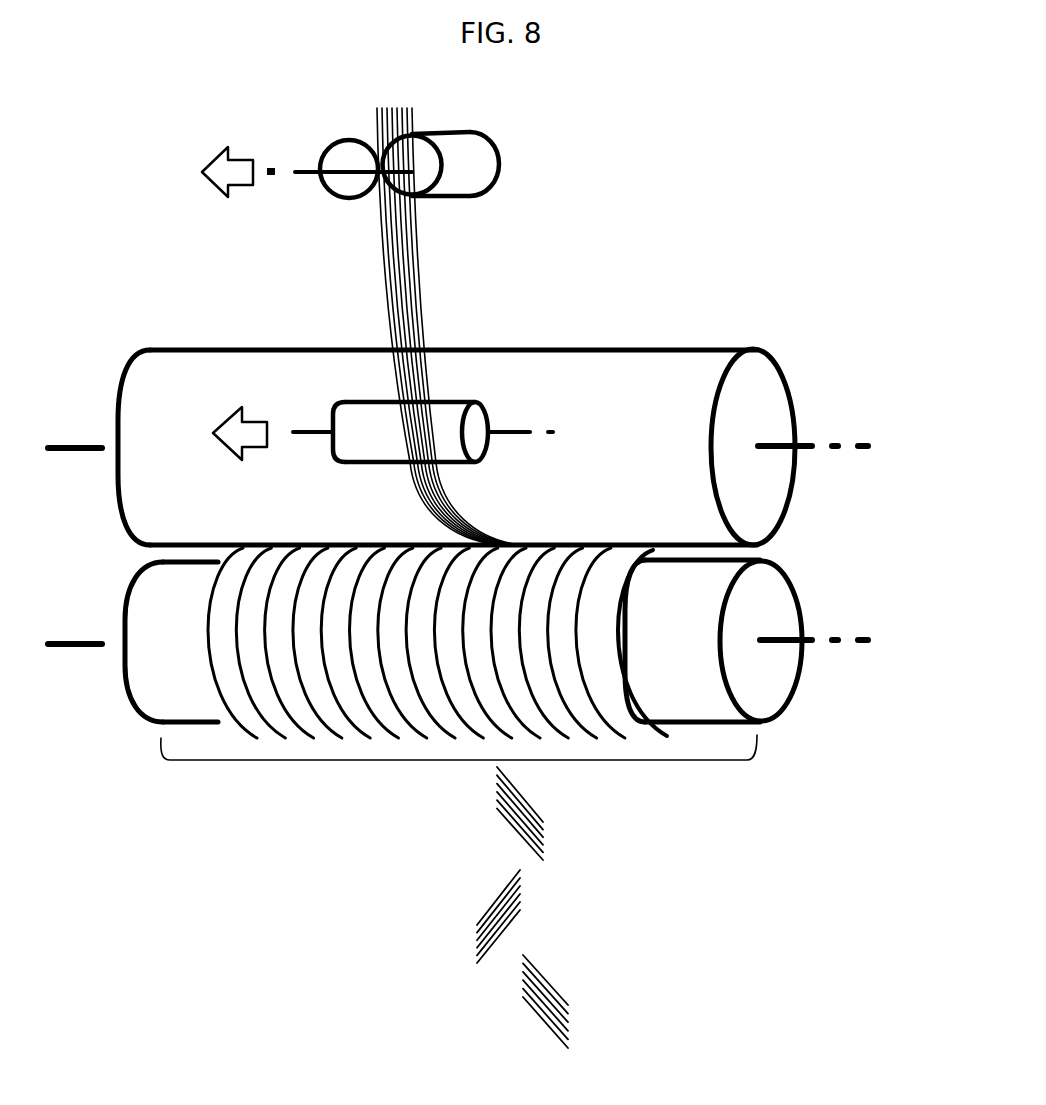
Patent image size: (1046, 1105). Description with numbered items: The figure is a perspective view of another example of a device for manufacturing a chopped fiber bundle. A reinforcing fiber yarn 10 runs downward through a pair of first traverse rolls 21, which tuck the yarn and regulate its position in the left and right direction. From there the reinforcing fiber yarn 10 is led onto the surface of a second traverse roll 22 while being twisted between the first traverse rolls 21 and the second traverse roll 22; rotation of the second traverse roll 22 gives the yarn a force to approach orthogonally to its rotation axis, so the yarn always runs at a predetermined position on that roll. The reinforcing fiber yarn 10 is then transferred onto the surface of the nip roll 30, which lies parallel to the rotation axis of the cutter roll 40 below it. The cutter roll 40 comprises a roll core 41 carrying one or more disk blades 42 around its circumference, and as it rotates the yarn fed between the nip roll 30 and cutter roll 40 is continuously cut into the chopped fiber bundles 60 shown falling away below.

The reinforcing fiber yarn 10 is at (400, 250).
The first traverse rolls 21 is at (463, 170).
The second traverse roll 22 is at (443, 410).
The nip roll 30 is at (170, 457).
The cutter roll 40 is at (459, 730).
The roll core 41 is at (760, 610).
The disk blades 42 is at (365, 739).
The cut fiber bundles 60 is at (532, 822).